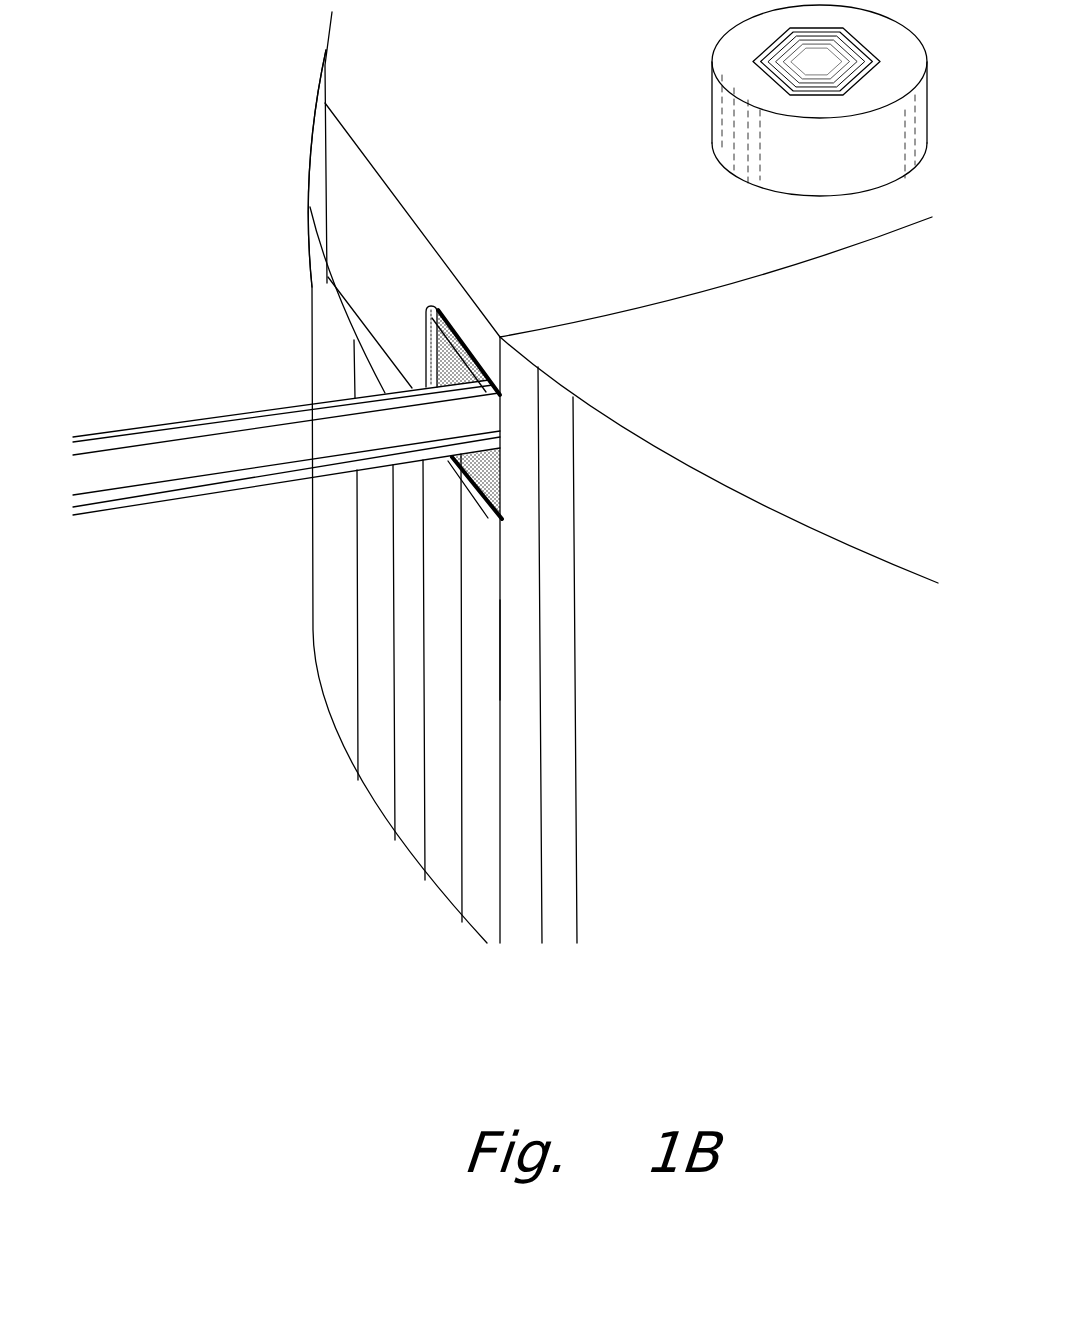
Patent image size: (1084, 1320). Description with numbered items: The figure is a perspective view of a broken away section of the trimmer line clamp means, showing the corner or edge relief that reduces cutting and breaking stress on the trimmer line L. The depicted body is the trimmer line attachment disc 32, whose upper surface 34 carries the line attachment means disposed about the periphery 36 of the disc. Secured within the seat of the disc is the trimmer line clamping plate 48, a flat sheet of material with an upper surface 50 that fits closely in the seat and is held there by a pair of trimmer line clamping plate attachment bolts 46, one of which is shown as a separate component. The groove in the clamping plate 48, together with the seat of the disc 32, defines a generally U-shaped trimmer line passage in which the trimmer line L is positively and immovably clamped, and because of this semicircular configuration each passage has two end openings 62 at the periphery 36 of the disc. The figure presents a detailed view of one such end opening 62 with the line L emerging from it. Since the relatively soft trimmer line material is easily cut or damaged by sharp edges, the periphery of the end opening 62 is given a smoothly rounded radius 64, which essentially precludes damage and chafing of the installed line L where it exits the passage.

The trimmer line attachment disc 32 is at (380, 828).
The upper surface 34 is at (871, 384).
The periphery 36 is at (714, 716).
The trimmer line clamping plate attachment bolt 46 is at (712, 47).
The trimmer line clamping plate 48 is at (328, 177).
The upper surface 50 is at (588, 150).
The end opening 62 is at (482, 497).
The smoothly rounded radius 64 is at (454, 312).
The trimmer line L is at (189, 500).